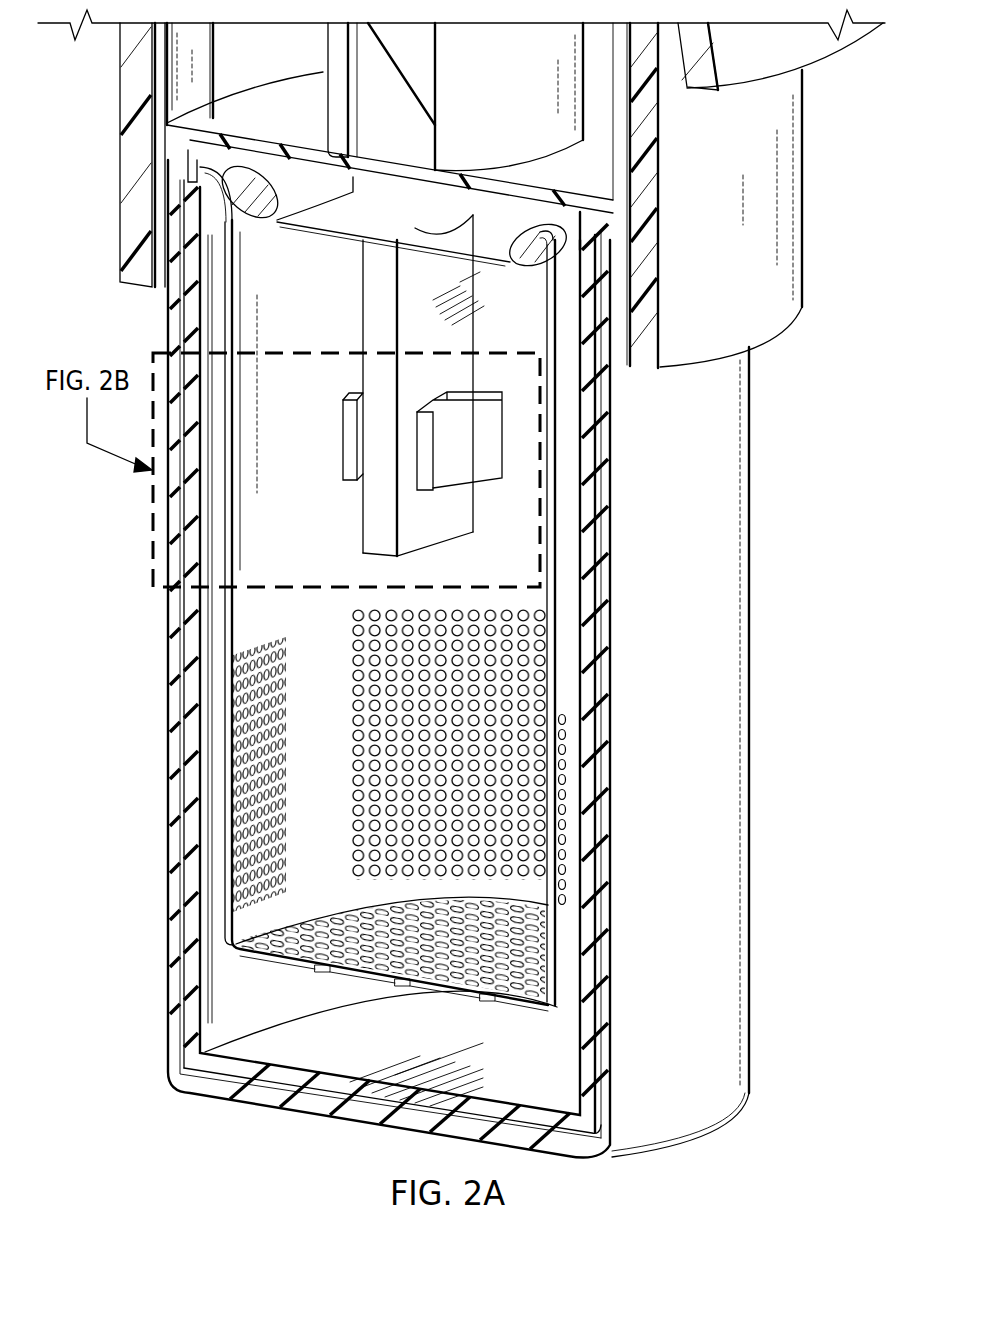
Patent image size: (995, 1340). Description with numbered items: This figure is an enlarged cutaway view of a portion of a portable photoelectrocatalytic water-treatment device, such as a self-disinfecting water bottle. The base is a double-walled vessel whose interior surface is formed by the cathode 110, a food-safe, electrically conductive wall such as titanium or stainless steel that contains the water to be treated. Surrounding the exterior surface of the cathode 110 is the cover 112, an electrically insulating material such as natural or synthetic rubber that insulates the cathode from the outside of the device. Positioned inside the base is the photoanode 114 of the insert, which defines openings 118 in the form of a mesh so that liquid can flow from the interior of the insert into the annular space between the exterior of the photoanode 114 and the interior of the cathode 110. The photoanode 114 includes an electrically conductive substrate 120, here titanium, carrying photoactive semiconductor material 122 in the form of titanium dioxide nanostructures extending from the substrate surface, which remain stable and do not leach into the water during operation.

The cathode 110 is at (195, 930).
The cover 112 is at (178, 1032).
The photoanode 114 is at (247, 607).
The openings 118 is at (242, 846).
The electrically conductive substrate 120 is at (316, 479).
The photoactive semiconductor material 122 is at (343, 427).